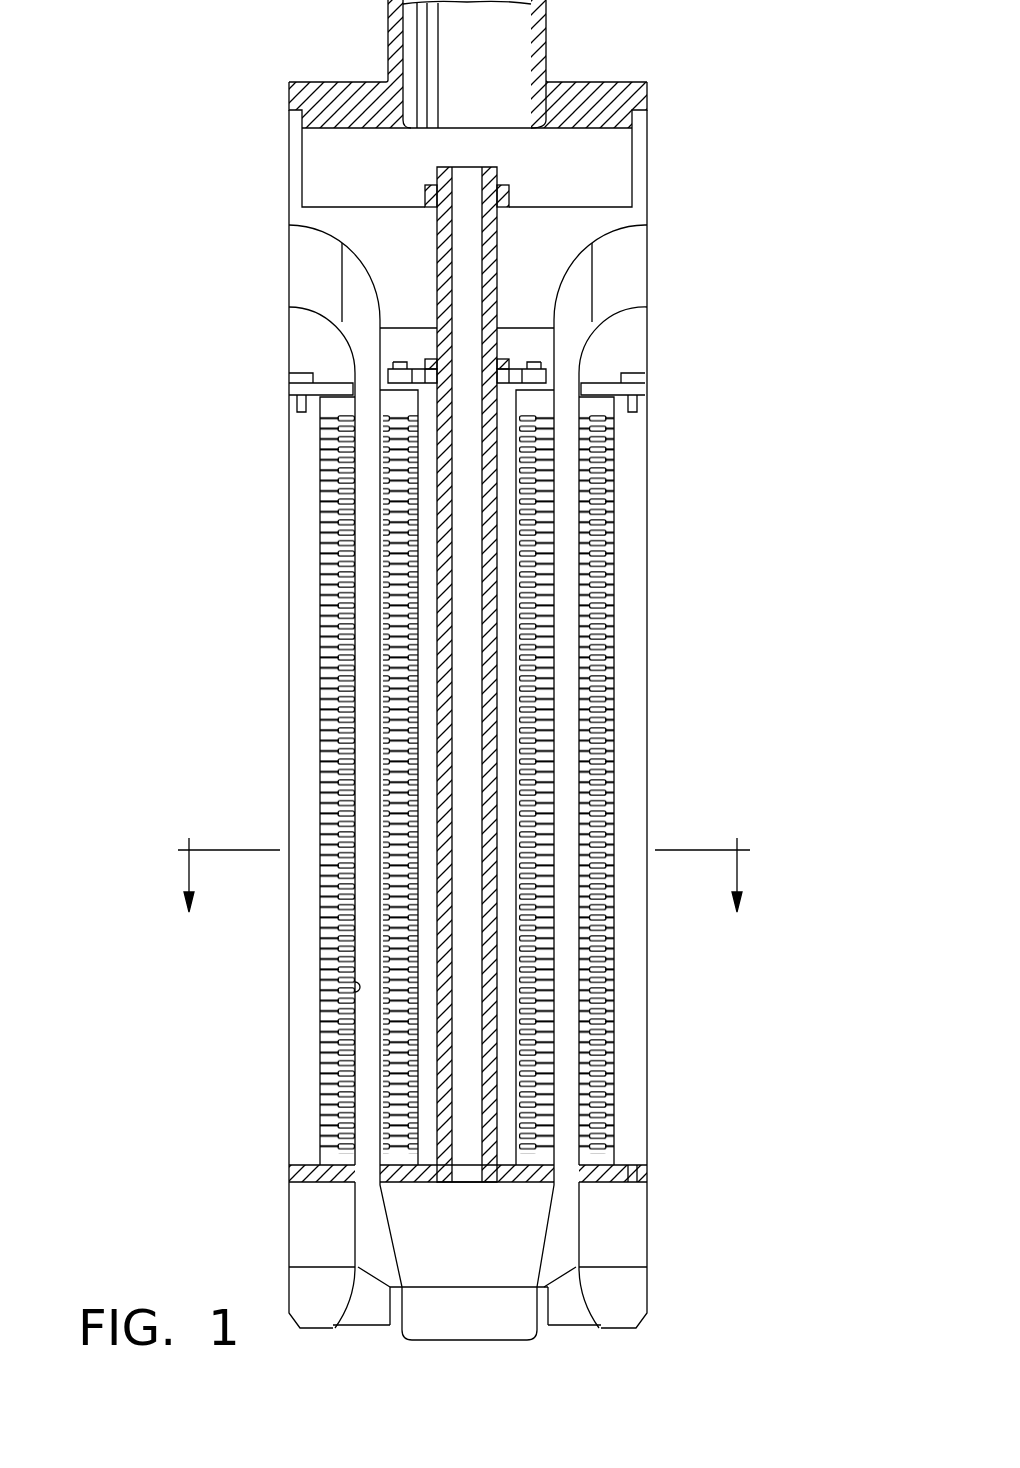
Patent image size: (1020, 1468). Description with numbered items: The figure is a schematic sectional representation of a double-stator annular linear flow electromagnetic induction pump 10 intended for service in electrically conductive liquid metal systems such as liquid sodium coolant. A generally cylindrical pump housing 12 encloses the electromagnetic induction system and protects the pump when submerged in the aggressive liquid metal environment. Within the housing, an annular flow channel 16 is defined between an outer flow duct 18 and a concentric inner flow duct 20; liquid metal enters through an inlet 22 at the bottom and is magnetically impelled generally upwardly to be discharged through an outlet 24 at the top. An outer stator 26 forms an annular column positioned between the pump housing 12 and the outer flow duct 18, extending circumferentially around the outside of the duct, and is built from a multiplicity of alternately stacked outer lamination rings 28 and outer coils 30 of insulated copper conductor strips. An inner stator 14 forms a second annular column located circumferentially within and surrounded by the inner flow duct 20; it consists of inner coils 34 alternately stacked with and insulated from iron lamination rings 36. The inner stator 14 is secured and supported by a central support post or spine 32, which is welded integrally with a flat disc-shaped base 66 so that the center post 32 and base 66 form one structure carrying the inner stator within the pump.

The double-stator annular linear flow electromagnetic induction pump 10 is at (480, 670).
The pump housing 12 is at (650, 602).
The inner stator 14 is at (397, 417).
The annular flow channel 16 is at (367, 888).
The outer flow duct 18 is at (367, 985).
The inner flow duct 20 is at (383, 797).
The inlet 22 is at (573, 1307).
The outlet 24 is at (627, 270).
The outer stator 26 is at (318, 455).
The outer lamination rings 28 is at (593, 890).
The outer coils 30 is at (593, 943).
The central support post 32 is at (493, 985).
The inner coils 34 is at (548, 655).
The lamination rings 36 is at (523, 750).
The base 66 is at (608, 1178).